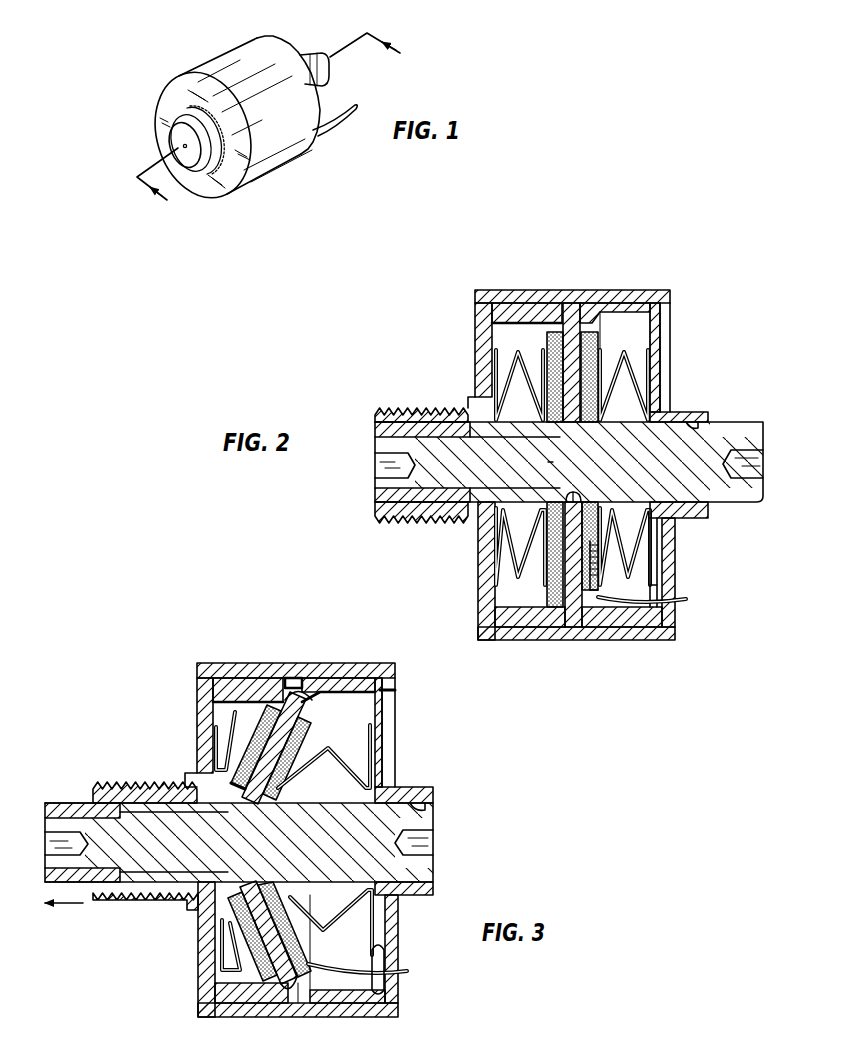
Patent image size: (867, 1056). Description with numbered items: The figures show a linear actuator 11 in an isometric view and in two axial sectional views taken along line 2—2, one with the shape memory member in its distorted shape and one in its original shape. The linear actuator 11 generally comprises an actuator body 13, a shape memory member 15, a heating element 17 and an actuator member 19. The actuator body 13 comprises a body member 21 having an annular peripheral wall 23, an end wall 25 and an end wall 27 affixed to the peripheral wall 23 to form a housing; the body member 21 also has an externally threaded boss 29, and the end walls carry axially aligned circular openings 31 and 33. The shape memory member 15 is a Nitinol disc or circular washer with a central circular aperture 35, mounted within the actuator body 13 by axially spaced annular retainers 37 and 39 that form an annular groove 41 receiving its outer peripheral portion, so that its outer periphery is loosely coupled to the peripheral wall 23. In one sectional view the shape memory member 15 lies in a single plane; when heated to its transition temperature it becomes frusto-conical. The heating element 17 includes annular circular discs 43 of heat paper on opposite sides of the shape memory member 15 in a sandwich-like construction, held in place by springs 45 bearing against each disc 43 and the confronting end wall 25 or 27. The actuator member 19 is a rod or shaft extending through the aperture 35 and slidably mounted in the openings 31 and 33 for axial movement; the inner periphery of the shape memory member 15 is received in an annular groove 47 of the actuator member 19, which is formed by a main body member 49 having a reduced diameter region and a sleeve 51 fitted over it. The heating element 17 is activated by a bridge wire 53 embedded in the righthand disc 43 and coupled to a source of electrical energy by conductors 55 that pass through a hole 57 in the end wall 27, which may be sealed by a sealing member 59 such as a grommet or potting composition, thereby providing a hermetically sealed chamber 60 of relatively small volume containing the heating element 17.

In FIG. 1, the section line 2— 2 is at (255, 108).
In FIG. 1, the linear actuator 11 is at (253, 32).
In FIG. 2, the linear actuator 11 is at (654, 272).
In FIG. 1, the actuator body 13 is at (204, 60).
In FIG. 2, the actuator body 13 is at (525, 289).
In FIG. 3, the actuator body 13 is at (227, 645).
In FIG. 2, the shape memory member 15 is at (545, 460).
In FIG. 3, the shape memory member 15 is at (284, 718).
In FIG. 2, the heating element 17 is at (548, 588).
In FIG. 1, the actuator member 19 is at (180, 136).
In FIG. 2, the actuator member 19 is at (384, 488).
In FIG. 3, the actuator member 19 is at (65, 801).
In FIG. 2, the body member 21 is at (472, 296).
In FIG. 2, the annular peripheral wall 23 is at (662, 297).
In FIG. 2, the end wall 25 is at (477, 352).
In FIG. 2, the end wall 27 is at (657, 343).
In FIG. 2, the externally threaded boss 29 is at (398, 410).
In FIG. 2, the circular opening 31 is at (377, 433).
In FIG. 3, the circular opening 31 is at (113, 790).
In FIG. 2, the circular opening 33 is at (693, 425).
In FIG. 3, the circular opening 33 is at (432, 812).
In FIG. 2, the central circular aperture 35 is at (648, 526).
In FIG. 2, the annular retainer 37 is at (504, 304).
In FIG. 2, the annular retainer 39 is at (645, 310).
In FIG. 2, the annular groove 41 is at (572, 305).
In FIG. 3, the annular groove 41 is at (293, 678).
In FIG. 2, the heat paper discs 43 is at (555, 565).
In FIG. 2, the springs 45 is at (512, 374).
In FIG. 3, the springs 45 is at (213, 718).
In FIG. 2, the annular groove 47 is at (572, 496).
In FIG. 3, the annular groove 47 is at (240, 888).
In FIG. 2, the main body member 49 is at (750, 503).
In FIG. 2, the sleeve 51 is at (378, 496).
In FIG. 2, the bridge wire 53 is at (593, 578).
In FIG. 2, the conductors 55 is at (683, 604).
In FIG. 2, the hole 57 is at (657, 614).
In FIG. 2, the sealing member 59 is at (647, 608).
In FIG. 2, the chamber 60 is at (620, 326).